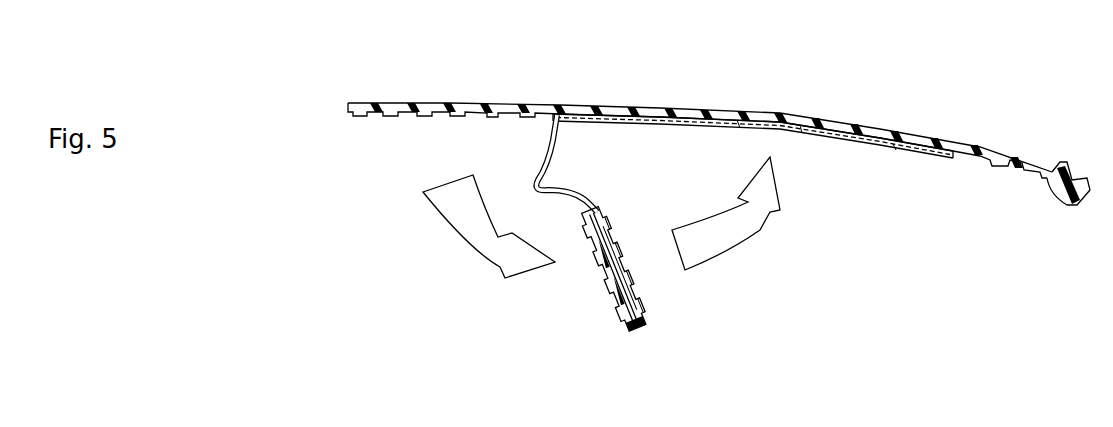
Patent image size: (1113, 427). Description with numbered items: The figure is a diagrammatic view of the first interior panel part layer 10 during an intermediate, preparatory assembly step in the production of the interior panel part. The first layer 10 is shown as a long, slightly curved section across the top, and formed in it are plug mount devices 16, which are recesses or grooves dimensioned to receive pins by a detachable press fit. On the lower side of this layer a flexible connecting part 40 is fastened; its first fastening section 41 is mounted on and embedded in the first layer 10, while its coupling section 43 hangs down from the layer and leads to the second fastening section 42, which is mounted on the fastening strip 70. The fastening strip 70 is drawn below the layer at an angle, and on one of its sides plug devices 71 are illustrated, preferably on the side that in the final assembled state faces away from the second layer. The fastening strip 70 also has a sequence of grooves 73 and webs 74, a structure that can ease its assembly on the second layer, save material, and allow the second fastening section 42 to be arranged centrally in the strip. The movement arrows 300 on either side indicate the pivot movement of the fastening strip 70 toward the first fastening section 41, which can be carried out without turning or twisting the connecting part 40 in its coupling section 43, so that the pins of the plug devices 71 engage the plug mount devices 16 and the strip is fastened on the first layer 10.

The first interior panel part layer 10 is at (870, 110).
The plug mount devices 16 is at (740, 122).
The flexible connecting part 40 is at (672, 136).
The first fastening section 41 is at (895, 146).
The second fastening section 42 is at (640, 328).
The coupling section 43 is at (530, 144).
The fastening strip 70 is at (623, 330).
The plug devices 71 is at (618, 240).
The grooves 73 is at (597, 263).
The webs 74 is at (613, 300).
The movement arrows 300 is at (601, 217).